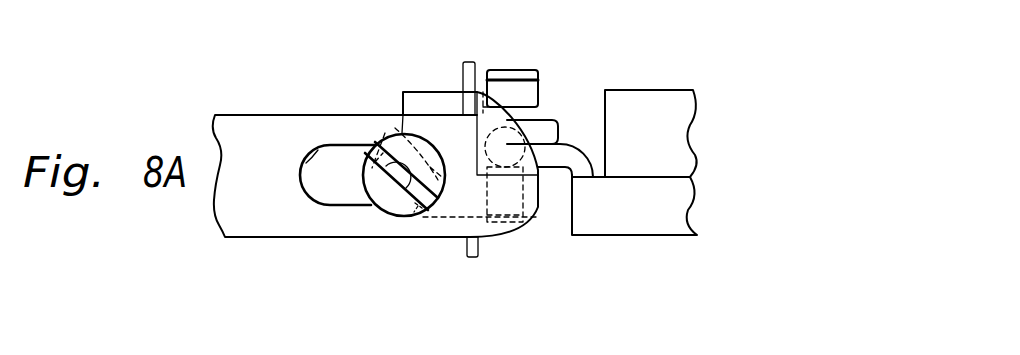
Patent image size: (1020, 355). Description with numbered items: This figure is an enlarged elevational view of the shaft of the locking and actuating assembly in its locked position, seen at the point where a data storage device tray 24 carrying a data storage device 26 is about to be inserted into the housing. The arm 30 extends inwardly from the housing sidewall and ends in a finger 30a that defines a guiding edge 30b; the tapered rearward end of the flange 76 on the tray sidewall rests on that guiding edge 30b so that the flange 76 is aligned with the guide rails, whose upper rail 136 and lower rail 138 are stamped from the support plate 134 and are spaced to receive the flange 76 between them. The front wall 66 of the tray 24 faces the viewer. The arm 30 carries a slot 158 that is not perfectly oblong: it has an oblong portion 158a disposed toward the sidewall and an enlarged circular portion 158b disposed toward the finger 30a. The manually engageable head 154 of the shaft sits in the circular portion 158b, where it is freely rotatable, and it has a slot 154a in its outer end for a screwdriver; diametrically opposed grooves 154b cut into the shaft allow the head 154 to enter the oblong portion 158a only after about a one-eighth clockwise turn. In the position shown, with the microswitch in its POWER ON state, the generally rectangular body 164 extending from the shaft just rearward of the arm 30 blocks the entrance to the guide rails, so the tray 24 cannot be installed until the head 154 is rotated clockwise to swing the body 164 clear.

The data storage device tray 24 is at (714, 209).
The data storage device 26 is at (663, 97).
The arm 30 is at (258, 122).
The finger 30a is at (500, 233).
The guiding edge 30b is at (523, 158).
The front wall 66 is at (657, 232).
The flange 76 is at (557, 120).
The support plate 134 is at (470, 260).
The upper rail 136 is at (512, 68).
The lower rail 138 is at (532, 227).
The manually engageable head 154 is at (360, 185).
The slot 154a is at (375, 215).
The grooves 154b is at (385, 133).
The slot 158 is at (315, 188).
The oblong portion 158a is at (320, 147).
The enlarged circular portion 158b is at (427, 130).
The generally rectangular body 164 is at (447, 90).